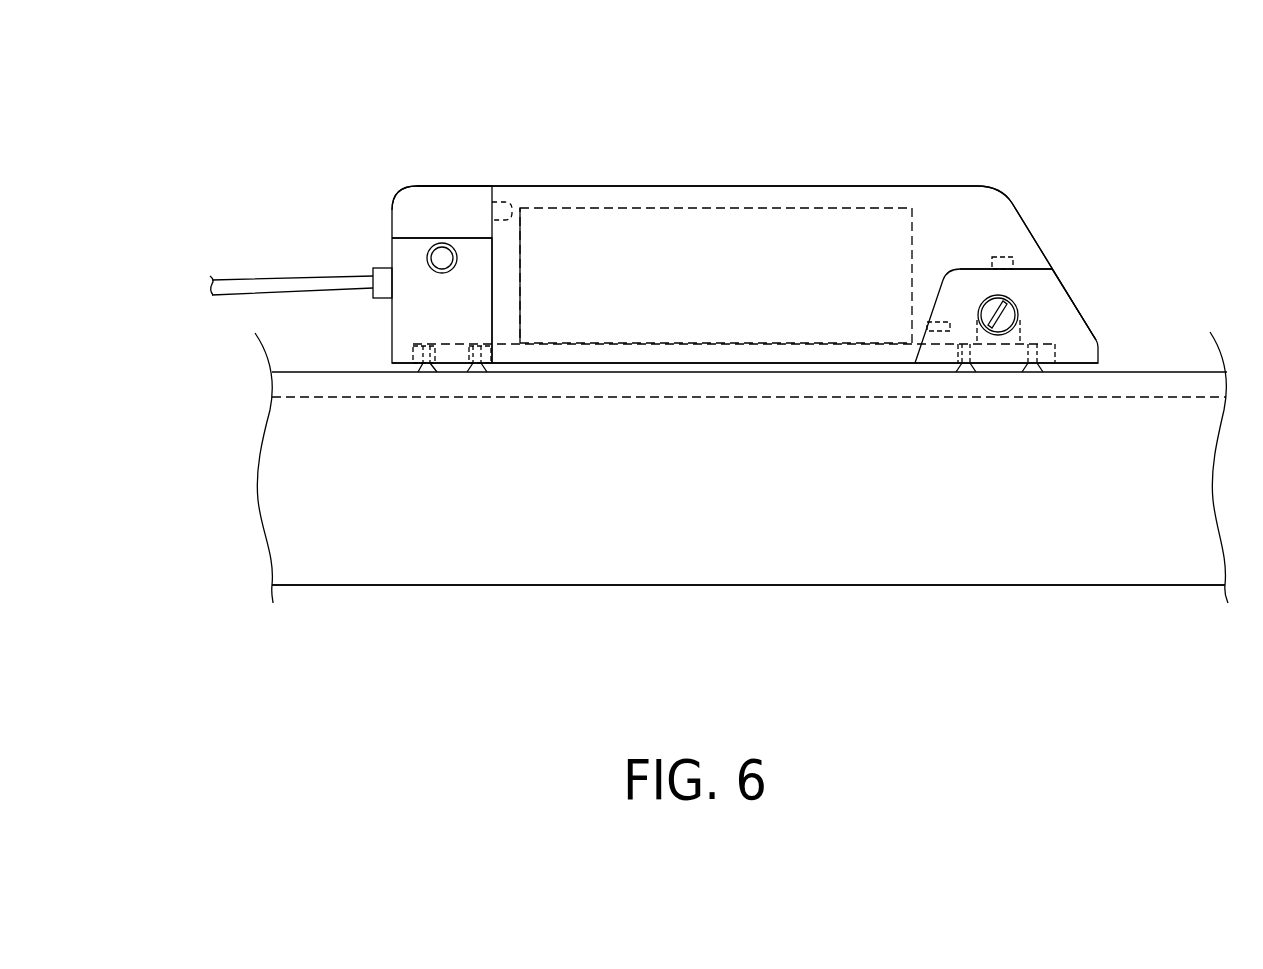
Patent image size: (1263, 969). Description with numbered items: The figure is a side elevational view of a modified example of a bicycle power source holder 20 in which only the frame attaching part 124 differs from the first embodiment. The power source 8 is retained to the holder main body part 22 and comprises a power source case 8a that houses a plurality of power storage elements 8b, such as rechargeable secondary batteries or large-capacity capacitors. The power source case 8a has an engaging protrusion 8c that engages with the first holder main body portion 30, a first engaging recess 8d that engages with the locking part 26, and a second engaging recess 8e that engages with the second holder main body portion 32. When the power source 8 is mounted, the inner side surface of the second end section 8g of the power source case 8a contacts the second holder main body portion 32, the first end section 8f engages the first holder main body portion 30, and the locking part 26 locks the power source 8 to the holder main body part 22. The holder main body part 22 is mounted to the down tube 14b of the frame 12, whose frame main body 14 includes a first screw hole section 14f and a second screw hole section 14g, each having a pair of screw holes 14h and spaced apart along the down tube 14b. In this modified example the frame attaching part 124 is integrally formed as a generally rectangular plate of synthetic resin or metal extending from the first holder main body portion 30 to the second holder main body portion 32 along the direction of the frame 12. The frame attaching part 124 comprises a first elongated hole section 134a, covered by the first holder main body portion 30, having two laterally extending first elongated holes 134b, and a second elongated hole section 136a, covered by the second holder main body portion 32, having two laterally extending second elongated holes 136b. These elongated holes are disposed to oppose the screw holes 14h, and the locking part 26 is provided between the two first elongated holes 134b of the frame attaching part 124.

The power source 8 is at (900, 167).
The power source case 8a is at (587, 183).
The power storage elements 8b is at (717, 207).
The engaging protrusion 8c is at (930, 331).
The first engaging recess 8d is at (975, 345).
The second engaging recess 8e is at (500, 197).
The first end section 8f is at (977, 193).
The second end section 8g is at (523, 193).
The bicycle frame 12 is at (577, 605).
The frame main body 14 is at (945, 593).
The down tube 14b is at (790, 535).
The first screw hole section 14f is at (998, 257).
The second screw hole section 14g is at (428, 352).
The screw holes 14h is at (428, 378).
The power source holder 20 is at (1020, 237).
The holder main body part 22 is at (1072, 272).
The locking part 26 is at (1010, 287).
The first holder main body portion 30 is at (1073, 285).
The second holder main body portion 32 is at (460, 182).
The frame attaching part 124 is at (690, 370).
The first elongated hole section 134a is at (1035, 347).
The first elongated hole 134b is at (977, 377).
The second elongated hole section 136a is at (477, 333).
The second elongated hole 136b is at (440, 377).